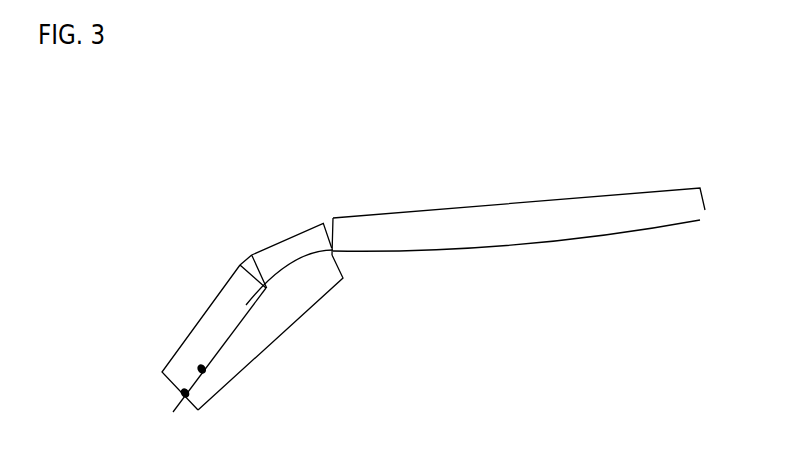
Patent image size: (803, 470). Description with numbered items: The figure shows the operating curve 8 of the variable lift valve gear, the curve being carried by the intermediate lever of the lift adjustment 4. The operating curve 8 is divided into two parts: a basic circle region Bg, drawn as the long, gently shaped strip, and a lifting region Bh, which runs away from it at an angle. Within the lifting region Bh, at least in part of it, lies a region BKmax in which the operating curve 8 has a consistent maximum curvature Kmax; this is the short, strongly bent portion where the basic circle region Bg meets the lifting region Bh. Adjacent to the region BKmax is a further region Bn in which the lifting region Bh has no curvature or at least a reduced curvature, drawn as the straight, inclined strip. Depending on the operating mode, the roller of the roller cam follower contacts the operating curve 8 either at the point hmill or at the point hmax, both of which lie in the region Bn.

The basic circle region Bg is at (515, 201).
The lift adjustment 4 is at (389, 242).
The region having a consistent maximum curvature BKmax is at (285, 237).
The region having no curvature or reduced curvature Bn is at (200, 317).
The lifting region Bh is at (273, 350).
The operating curve 8 is at (248, 306).
The contact point hmill is at (197, 367).
The contact point hmax is at (180, 393).